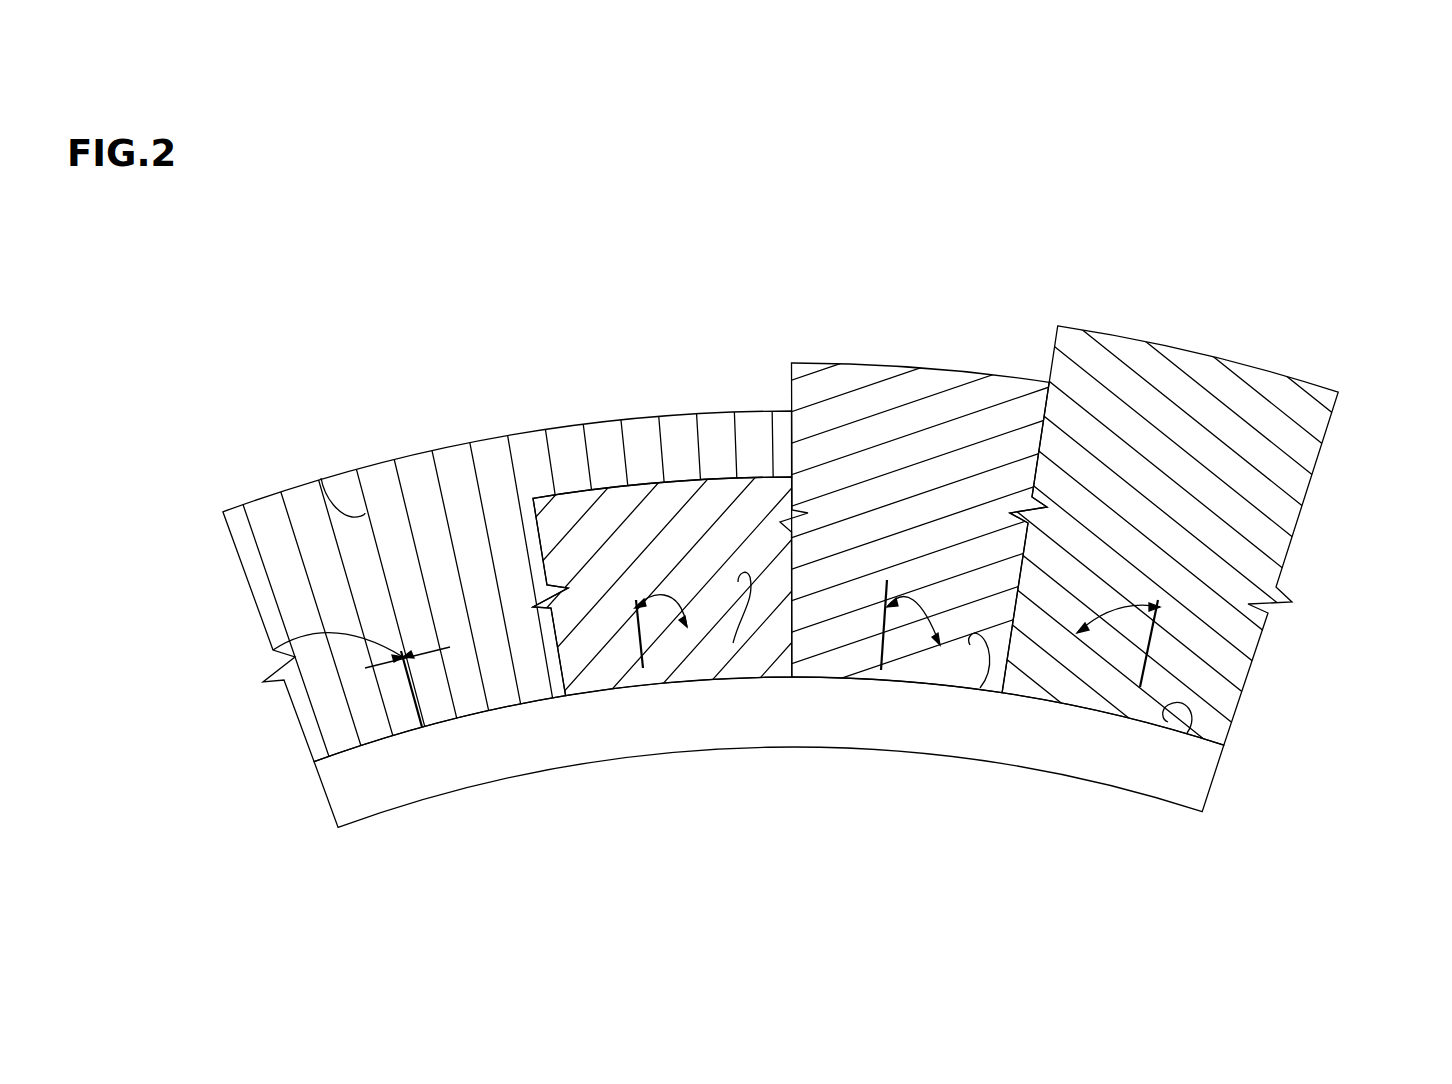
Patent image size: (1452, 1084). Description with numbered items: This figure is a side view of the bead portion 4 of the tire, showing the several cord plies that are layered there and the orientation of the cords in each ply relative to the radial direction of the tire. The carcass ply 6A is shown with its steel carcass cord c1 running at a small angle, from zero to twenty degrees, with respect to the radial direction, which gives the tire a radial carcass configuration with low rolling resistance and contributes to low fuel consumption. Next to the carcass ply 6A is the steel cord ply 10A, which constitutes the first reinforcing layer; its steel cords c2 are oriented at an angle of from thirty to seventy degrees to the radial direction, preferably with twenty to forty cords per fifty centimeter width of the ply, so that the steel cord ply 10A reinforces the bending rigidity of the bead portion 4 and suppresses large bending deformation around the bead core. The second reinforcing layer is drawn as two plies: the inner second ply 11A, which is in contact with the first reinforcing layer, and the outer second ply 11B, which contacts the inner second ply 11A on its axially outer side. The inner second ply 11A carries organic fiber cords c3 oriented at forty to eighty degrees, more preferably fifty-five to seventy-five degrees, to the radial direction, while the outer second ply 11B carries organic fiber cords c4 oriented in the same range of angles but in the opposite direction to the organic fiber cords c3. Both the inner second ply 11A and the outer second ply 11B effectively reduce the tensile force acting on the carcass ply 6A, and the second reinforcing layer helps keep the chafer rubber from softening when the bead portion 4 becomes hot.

The bead portion 4 is at (1355, 398).
The carcass ply 6A is at (451, 497).
The steel cord ply 10A is at (705, 510).
The inner second ply 11A is at (958, 403).
The outer second ply 11B is at (1197, 373).
The steel carcass cord c1 is at (321, 478).
The steel cords c2 is at (733, 643).
The organic fiber cords c3 is at (980, 688).
The organic fiber cords c4 is at (1187, 733).